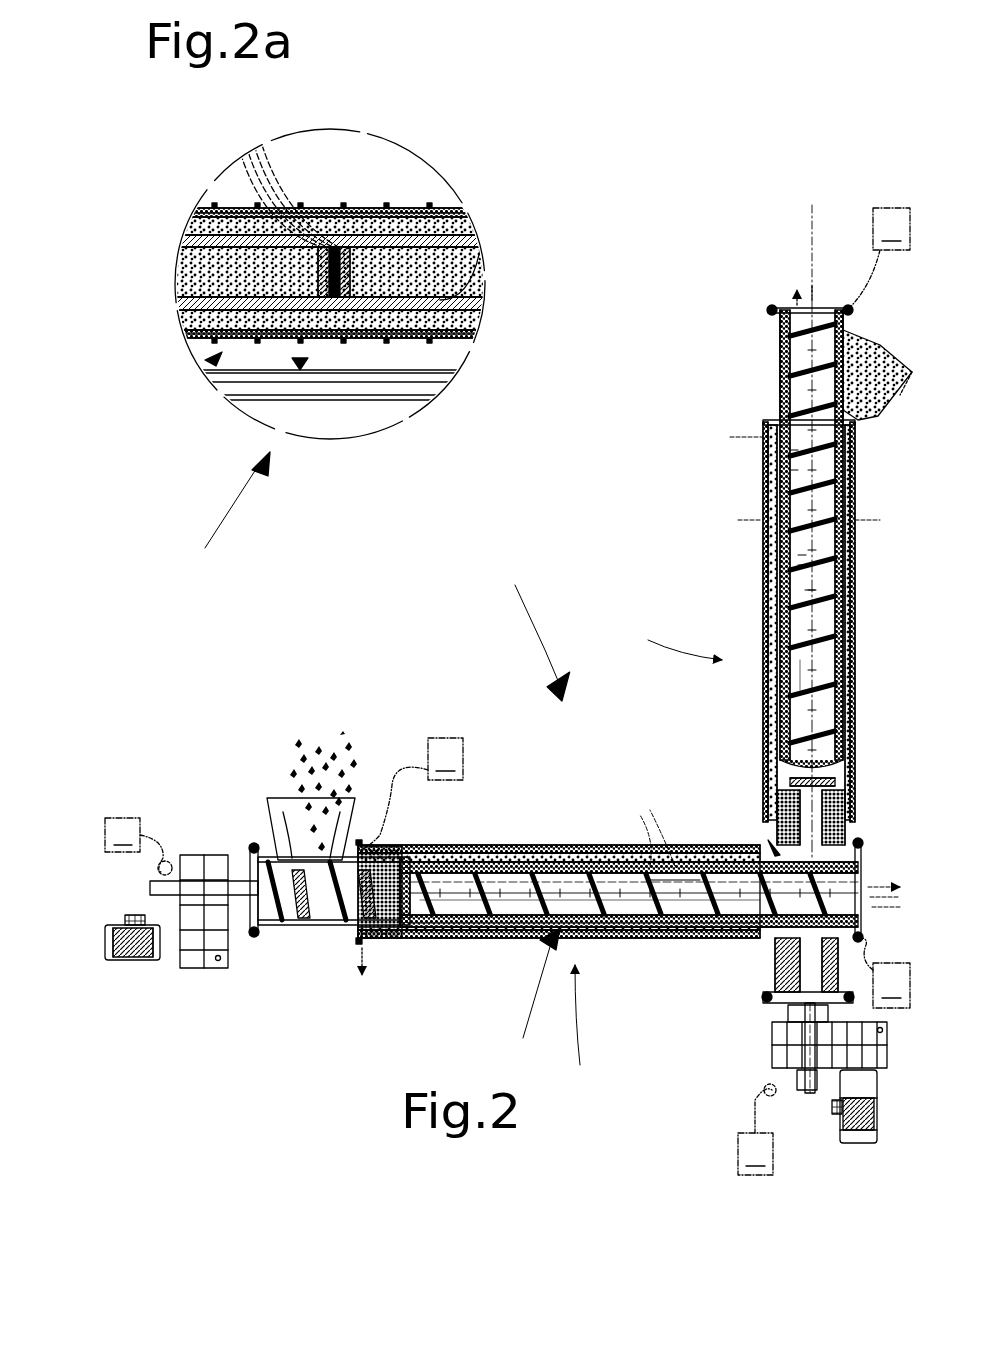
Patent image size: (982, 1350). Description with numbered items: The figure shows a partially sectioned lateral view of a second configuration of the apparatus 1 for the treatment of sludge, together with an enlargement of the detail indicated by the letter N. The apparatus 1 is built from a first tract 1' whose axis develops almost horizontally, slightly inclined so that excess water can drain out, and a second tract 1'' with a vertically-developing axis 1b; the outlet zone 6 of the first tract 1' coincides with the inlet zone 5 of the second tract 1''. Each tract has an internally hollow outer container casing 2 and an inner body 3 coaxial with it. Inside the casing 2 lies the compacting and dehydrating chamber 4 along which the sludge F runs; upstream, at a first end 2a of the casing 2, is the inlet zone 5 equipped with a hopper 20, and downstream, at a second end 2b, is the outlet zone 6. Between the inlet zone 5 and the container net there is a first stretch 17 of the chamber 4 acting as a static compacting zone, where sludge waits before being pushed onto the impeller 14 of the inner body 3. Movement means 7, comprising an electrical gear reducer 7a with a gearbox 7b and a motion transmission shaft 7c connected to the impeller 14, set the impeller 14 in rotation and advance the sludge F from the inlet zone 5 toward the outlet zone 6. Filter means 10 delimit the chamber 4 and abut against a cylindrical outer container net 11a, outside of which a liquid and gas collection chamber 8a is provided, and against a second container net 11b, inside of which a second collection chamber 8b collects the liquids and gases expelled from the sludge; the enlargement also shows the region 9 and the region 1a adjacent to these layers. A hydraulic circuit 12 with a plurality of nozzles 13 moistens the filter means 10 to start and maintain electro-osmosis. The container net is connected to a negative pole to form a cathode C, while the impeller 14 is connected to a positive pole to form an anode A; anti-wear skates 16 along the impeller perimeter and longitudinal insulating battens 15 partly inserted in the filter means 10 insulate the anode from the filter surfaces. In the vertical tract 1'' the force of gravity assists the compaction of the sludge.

In FIG. 2, the apparatus for the treatment of sludge 1 is at (542, 643).
In FIG. 2, the first tract 1' is at (577, 1015).
In FIG. 2, the second tract 1'' is at (685, 650).
In FIG. 2, the inlet end of conveyor 1a is at (380, 866).
In FIG. 2, the vertically-developing axis 1b is at (812, 800).
In FIG. 2A, the outer container casing 2 is at (290, 400).
In FIG. 2, the outer container casing 2 is at (855, 720).
In FIG. 2, the first end of the outer casing 2a is at (350, 940).
In FIG. 2, the second end of the casing 2b is at (770, 428).
In FIG. 2, the inner body 3 is at (815, 816).
In FIG. 2A, the compacting and dehydrating chamber 4 is at (470, 267).
In FIG. 2, the compacting and dehydrating chamber 4 is at (843, 590).
In FIG. 2, the inlet zone 5 is at (265, 790).
In FIG. 2, the outlet zone 6 is at (903, 285).
In FIG. 2, the movement means 7 is at (163, 728).
In FIG. 2, the electrical gear reducer 7a is at (860, 1142).
In FIG. 2, the gearbox 7b is at (778, 1060).
In FIG. 2, the motion transmission shaft 7c is at (790, 1005).
In FIG. 2A, the liquid and gas collection chamber 8a is at (415, 360).
In FIG. 2, the liquid and gas collection chamber 8a is at (852, 498).
In FIG. 2A, the second collection chamber 8b is at (320, 165).
In FIG. 2, the second collection chamber 8b is at (815, 675).
In FIG. 2A, the heating medium flow 9 is at (210, 358).
In FIG. 2A, the filter means 10 is at (450, 325).
In FIG. 2A, the container net 11a is at (450, 352).
In FIG. 2A, the second container net 11b is at (440, 210).
In FIG. 2A, the hydraulic circuit 12 is at (355, 380).
In FIG. 2, the hydraulic circuit 12 is at (835, 565).
In FIG. 2A, the nozzles 13 is at (300, 372).
In FIG. 2, the nozzles 13 is at (848, 797).
In FIG. 2A, the impeller 14 is at (290, 262).
In FIG. 2, the impeller 14 is at (805, 790).
In FIG. 2A, the longitudinal insulating battens 15 is at (380, 245).
In FIG. 2, the longitudinal insulating battens 15 is at (782, 632).
In FIG. 2A, the anti-wear skates 16 is at (335, 250).
In FIG. 2, the first stretch of compacting and dehydrating chamber 17 is at (822, 880).
In FIG. 2, the hopper 20 is at (280, 830).
In FIG. 2A, the sludge F is at (450, 285).
In FIG. 2, the sludge F is at (780, 568).
In FIG. 2A, the detail N is at (237, 500).
In FIG. 2, the detail N is at (541, 983).
In FIG. 2, the anode A is at (440, 996).
In FIG. 2, the cathode C is at (635, 608).